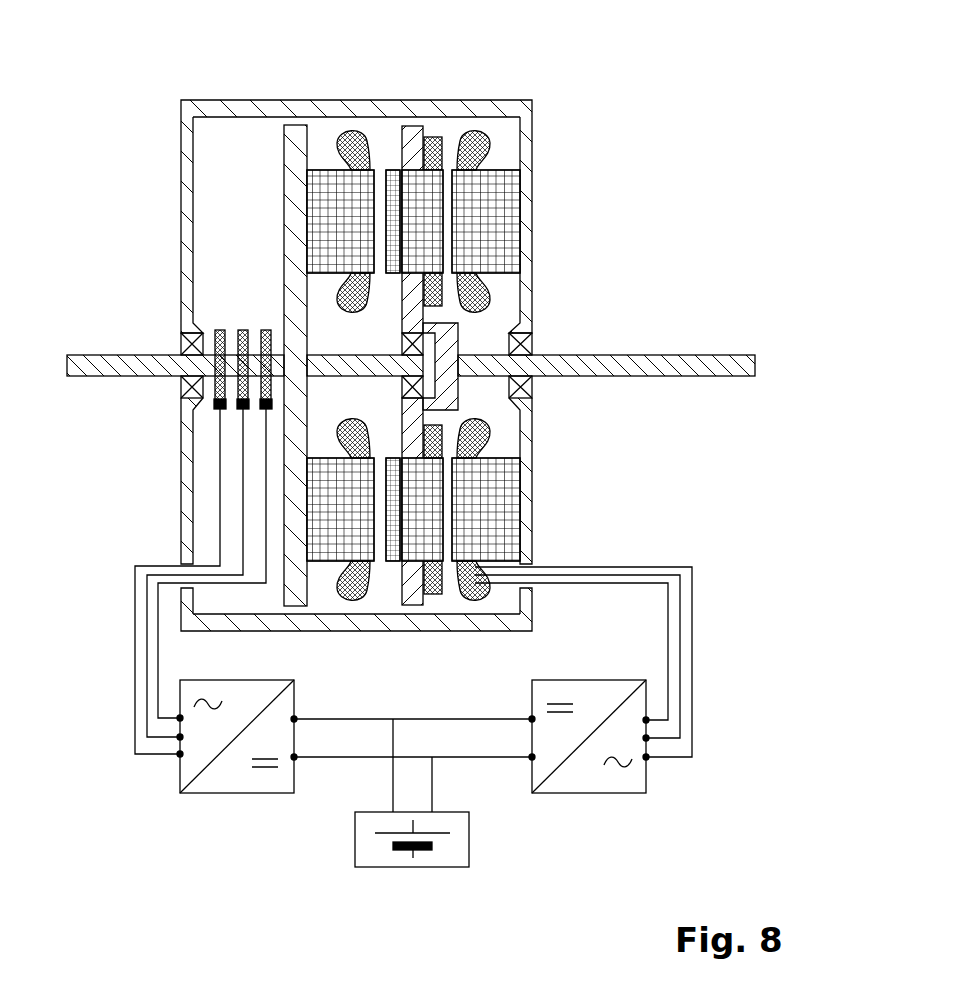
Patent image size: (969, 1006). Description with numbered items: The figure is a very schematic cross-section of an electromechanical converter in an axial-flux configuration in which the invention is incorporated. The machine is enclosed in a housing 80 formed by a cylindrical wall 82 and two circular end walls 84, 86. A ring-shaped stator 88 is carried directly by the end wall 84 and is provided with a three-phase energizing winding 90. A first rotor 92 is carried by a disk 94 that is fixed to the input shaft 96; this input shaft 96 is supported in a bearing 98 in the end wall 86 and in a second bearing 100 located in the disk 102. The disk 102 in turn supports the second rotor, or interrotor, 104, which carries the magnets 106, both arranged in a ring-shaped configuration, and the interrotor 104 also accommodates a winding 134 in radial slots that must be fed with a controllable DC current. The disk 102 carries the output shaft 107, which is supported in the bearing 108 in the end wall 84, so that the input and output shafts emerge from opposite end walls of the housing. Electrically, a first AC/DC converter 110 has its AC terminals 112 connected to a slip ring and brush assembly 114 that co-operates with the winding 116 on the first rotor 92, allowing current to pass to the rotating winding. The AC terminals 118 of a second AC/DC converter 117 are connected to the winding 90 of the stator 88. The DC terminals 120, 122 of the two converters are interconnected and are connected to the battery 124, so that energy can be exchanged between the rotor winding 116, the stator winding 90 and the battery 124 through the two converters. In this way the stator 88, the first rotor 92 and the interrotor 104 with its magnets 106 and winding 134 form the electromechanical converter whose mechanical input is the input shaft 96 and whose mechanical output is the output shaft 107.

The housing 80 is at (545, 86).
The cylindrical wall 82 is at (355, 333).
The end wall 84 is at (527, 140).
The end wall 86 is at (187, 139).
The stator 88 is at (485, 222).
The three-phase energizing winding 90 is at (477, 145).
The first rotor 92 is at (340, 221).
The disk 94 is at (293, 255).
The input shaft 96 is at (90, 355).
The bearing 98 is at (184, 387).
The second bearing 100 is at (413, 393).
The disk 102 is at (413, 288).
The second (inter)rotor 104 is at (423, 187).
The magnets 106 is at (395, 187).
The output shaft 107 is at (737, 355).
The bearing 108 is at (527, 387).
The first AC/DC converter 110 is at (237, 793).
The AC terminals 112 is at (180, 755).
The slip ring and brush assembly 114 is at (232, 399).
The winding 116 is at (354, 130).
The second AC/DC converter 117 is at (588, 793).
The AC terminals 118 is at (646, 757).
The DC terminals 120 is at (297, 719).
The DC terminals 122 is at (529, 719).
The battery 124 is at (452, 850).
The winding 134 is at (433, 137).